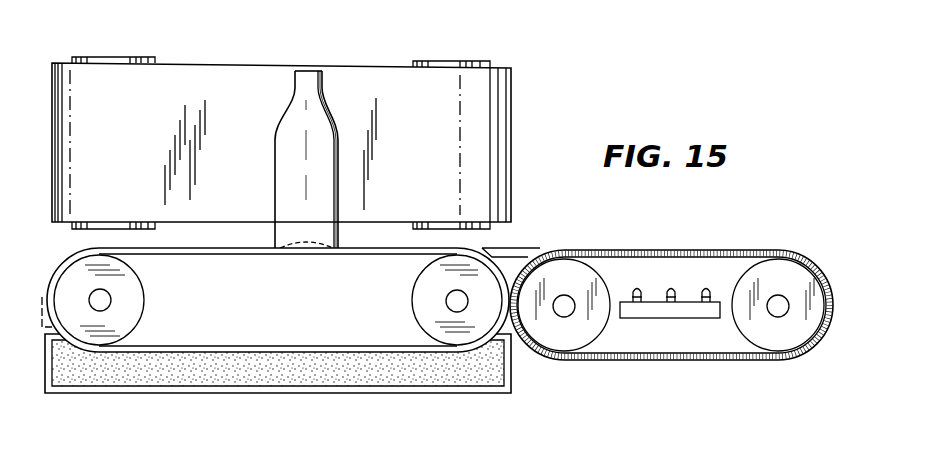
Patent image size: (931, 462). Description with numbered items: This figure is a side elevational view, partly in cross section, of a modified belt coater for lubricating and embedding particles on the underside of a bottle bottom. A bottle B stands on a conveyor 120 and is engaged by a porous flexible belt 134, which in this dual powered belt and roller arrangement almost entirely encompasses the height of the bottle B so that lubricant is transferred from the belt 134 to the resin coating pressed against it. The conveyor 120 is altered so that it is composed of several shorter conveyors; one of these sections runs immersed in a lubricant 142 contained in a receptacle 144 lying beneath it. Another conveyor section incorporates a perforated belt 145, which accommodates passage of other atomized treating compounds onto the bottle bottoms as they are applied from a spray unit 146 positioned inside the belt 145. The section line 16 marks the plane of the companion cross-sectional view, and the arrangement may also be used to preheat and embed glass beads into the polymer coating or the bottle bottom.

The section line 16- 16 is at (18, 37).
The porous flexible belt 134 is at (258, 85).
The bottle B is at (327, 128).
The conveyor 120 is at (219, 254).
The lubricant 142 is at (162, 382).
The receptacle 144 is at (437, 392).
The perforated belt 145 is at (614, 360).
The spray unit 146 is at (683, 305).